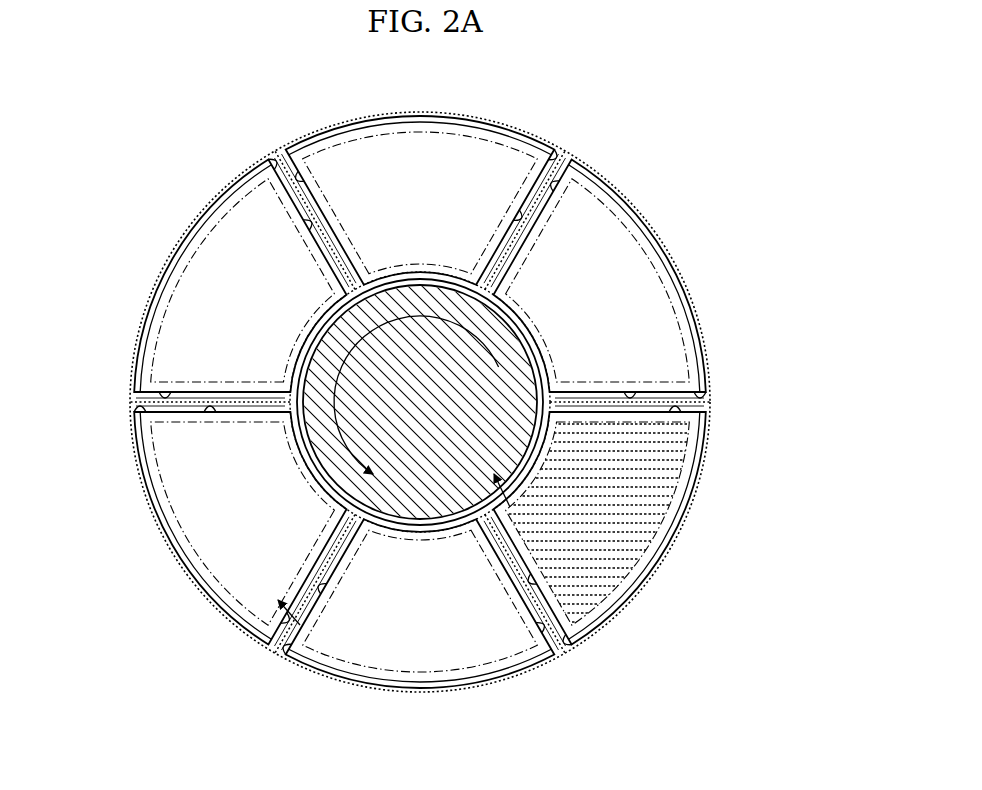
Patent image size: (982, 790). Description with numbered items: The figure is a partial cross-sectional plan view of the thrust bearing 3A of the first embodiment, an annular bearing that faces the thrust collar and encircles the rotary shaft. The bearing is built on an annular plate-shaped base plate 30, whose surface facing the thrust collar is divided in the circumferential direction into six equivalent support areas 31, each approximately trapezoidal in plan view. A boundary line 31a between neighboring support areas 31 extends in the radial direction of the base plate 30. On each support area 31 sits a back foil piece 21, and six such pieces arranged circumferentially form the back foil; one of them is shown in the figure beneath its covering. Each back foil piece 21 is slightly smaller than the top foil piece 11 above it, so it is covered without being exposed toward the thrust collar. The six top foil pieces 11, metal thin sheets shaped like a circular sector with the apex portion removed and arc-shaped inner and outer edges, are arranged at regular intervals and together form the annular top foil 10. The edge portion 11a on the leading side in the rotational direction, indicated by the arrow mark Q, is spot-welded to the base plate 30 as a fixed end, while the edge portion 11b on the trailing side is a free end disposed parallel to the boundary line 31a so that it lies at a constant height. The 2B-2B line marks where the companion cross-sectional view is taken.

The top foil 10 is at (658, 233).
The top foil piece 11 is at (190, 237).
The edge portion (leading edge) 11a is at (297, 218).
The edge portion (trailing edge) 11b is at (297, 162).
The back foil piece 21 is at (348, 120).
The base plate 30 is at (607, 164).
The support area 31 is at (162, 261).
The boundary line 31a is at (305, 178).
The thrust bearing 3A is at (686, 100).
The 2B-2B line 2B is at (379, 536).
The arrow mark Q is at (416, 404).